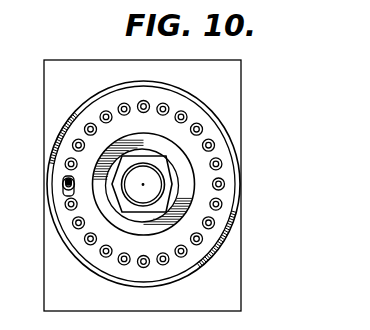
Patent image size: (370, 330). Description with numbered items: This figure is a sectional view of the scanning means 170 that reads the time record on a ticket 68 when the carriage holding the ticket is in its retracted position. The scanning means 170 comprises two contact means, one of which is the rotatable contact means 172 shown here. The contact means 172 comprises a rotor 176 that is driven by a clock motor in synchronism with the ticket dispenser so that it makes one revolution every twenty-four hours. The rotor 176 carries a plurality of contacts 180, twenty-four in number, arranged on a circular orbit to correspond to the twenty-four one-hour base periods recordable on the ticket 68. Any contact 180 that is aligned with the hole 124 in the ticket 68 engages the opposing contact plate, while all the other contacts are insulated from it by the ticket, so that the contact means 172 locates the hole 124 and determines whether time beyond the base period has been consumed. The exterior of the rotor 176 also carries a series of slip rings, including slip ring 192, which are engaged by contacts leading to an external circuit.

The ticket 68 is at (241, 96).
The hole 124 is at (67, 173).
The scanning means 170 is at (223, 183).
The contact means 172 is at (224, 248).
The rotor 176 is at (233, 208).
The contacts 180 is at (214, 145).
The slip ring 192 is at (201, 97).